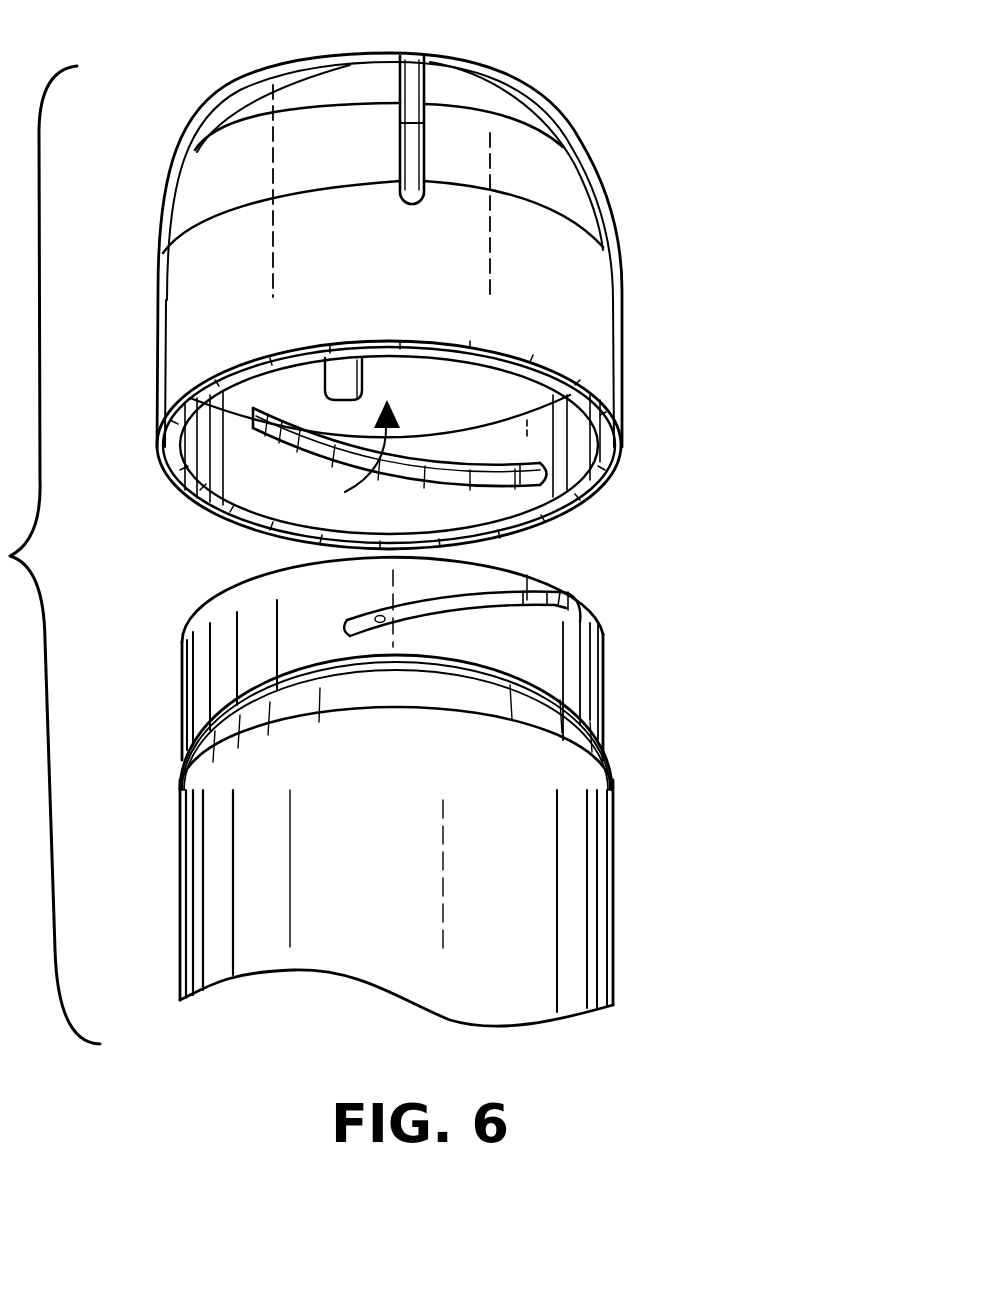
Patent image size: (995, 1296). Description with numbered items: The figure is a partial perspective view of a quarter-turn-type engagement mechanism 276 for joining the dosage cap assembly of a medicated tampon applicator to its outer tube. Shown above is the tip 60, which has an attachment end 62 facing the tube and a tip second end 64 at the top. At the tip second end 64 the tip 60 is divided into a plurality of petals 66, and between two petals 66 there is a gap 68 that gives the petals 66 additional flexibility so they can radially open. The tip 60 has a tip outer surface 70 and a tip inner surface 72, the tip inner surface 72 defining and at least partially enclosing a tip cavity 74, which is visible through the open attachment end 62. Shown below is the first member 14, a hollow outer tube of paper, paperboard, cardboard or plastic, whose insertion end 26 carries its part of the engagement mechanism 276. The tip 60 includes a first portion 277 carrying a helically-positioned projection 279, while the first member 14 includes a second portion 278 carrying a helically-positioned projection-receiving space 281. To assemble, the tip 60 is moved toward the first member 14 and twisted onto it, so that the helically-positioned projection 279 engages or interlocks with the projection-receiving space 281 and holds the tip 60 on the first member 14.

The first member 14 is at (617, 908).
The insertion end 26 is at (180, 790).
The tip 60 is at (623, 291).
The attachment end 62 is at (622, 407).
The tip second end 64 is at (598, 174).
The petals 66 is at (487, 100).
The gap 68 is at (403, 60).
The tip outer surface 70 is at (378, 298).
The tip inner surface 72 is at (303, 380).
The tip cavity 74 is at (352, 480).
The quarter-turn-type engagement mechanism 276 is at (775, 558).
The first portion 277 is at (605, 490).
The second portion 278 is at (606, 672).
The helically-positioned projection 279 is at (515, 482).
The helically-positioned projection-receiving space 281 is at (565, 598).